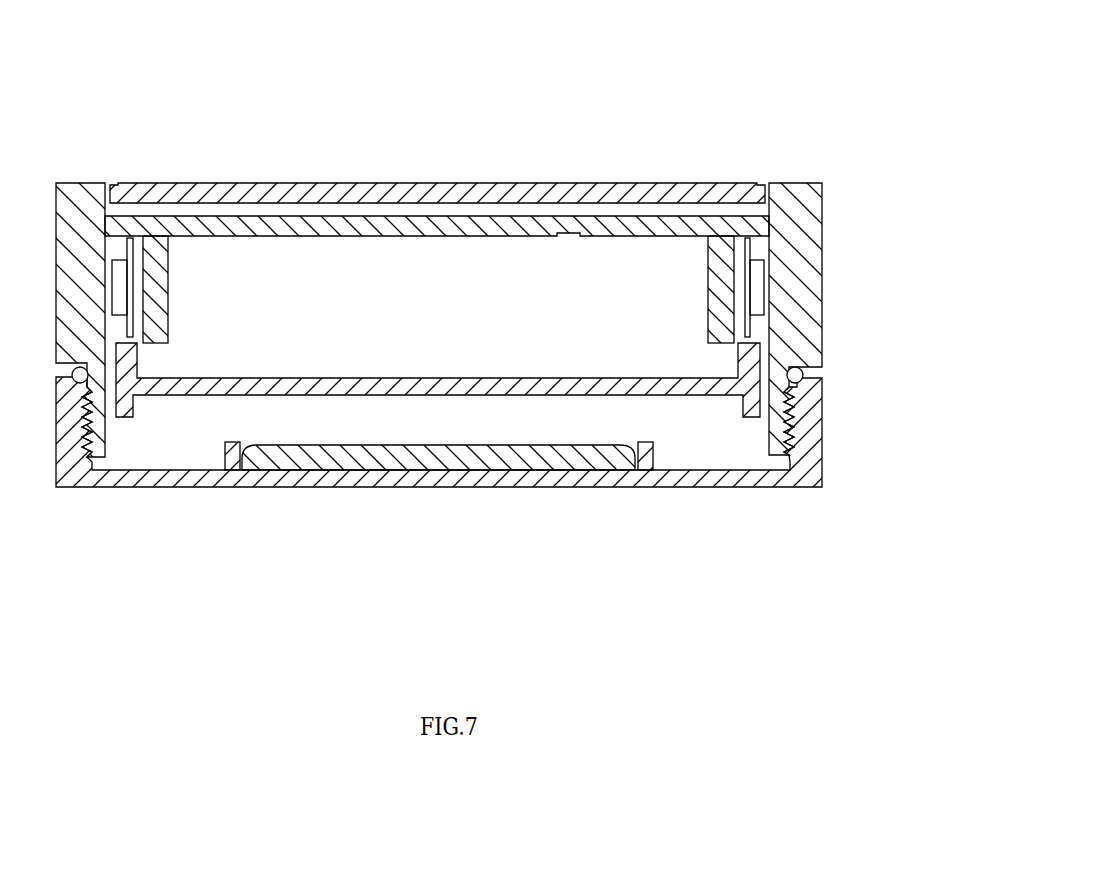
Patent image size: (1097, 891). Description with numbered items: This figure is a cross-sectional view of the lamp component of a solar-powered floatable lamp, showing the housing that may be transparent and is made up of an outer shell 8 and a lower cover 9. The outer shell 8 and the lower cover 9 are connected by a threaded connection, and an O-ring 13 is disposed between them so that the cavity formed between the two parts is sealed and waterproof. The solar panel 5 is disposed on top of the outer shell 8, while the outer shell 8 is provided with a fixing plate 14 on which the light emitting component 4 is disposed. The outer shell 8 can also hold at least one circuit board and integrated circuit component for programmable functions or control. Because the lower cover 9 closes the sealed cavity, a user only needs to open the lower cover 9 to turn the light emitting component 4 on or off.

The light emitting component 4 is at (758, 288).
The solar panel 5 is at (695, 195).
The outer shell 8 is at (798, 312).
The lower cover 9 is at (737, 480).
The O-ring 13 is at (801, 372).
The fixing plate 14 is at (745, 385).